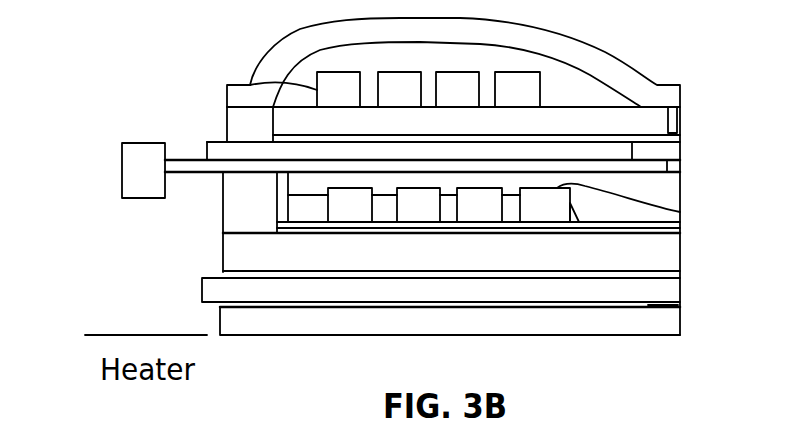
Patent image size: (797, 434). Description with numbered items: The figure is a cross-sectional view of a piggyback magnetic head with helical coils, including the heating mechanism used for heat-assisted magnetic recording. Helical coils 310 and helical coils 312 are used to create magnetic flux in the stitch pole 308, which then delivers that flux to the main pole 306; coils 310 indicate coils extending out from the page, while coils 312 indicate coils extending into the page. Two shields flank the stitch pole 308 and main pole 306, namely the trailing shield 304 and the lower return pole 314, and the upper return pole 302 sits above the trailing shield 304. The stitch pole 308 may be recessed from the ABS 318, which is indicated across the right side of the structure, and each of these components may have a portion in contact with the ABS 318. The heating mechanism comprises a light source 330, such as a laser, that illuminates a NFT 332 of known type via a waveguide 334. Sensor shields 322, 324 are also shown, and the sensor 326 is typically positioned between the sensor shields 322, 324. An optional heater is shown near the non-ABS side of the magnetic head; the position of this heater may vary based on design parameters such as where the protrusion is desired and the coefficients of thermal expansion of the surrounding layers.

The upper return pole 302 is at (603, 53).
The trailing shield 304 is at (680, 122).
The main pole 306 is at (680, 143).
The stitch pole 308 is at (222, 140).
The helical coils 310 is at (250, 85).
The helical coils 312 is at (680, 212).
The lower return pole 314 is at (490, 259).
The ABS 318 is at (692, 239).
The sensor shield 322 is at (202, 280).
The sensor shield 324 is at (220, 318).
The sensor 326 is at (672, 303).
The light source 330 is at (122, 168).
The NFT 332 is at (680, 163).
The waveguide 334 is at (188, 158).